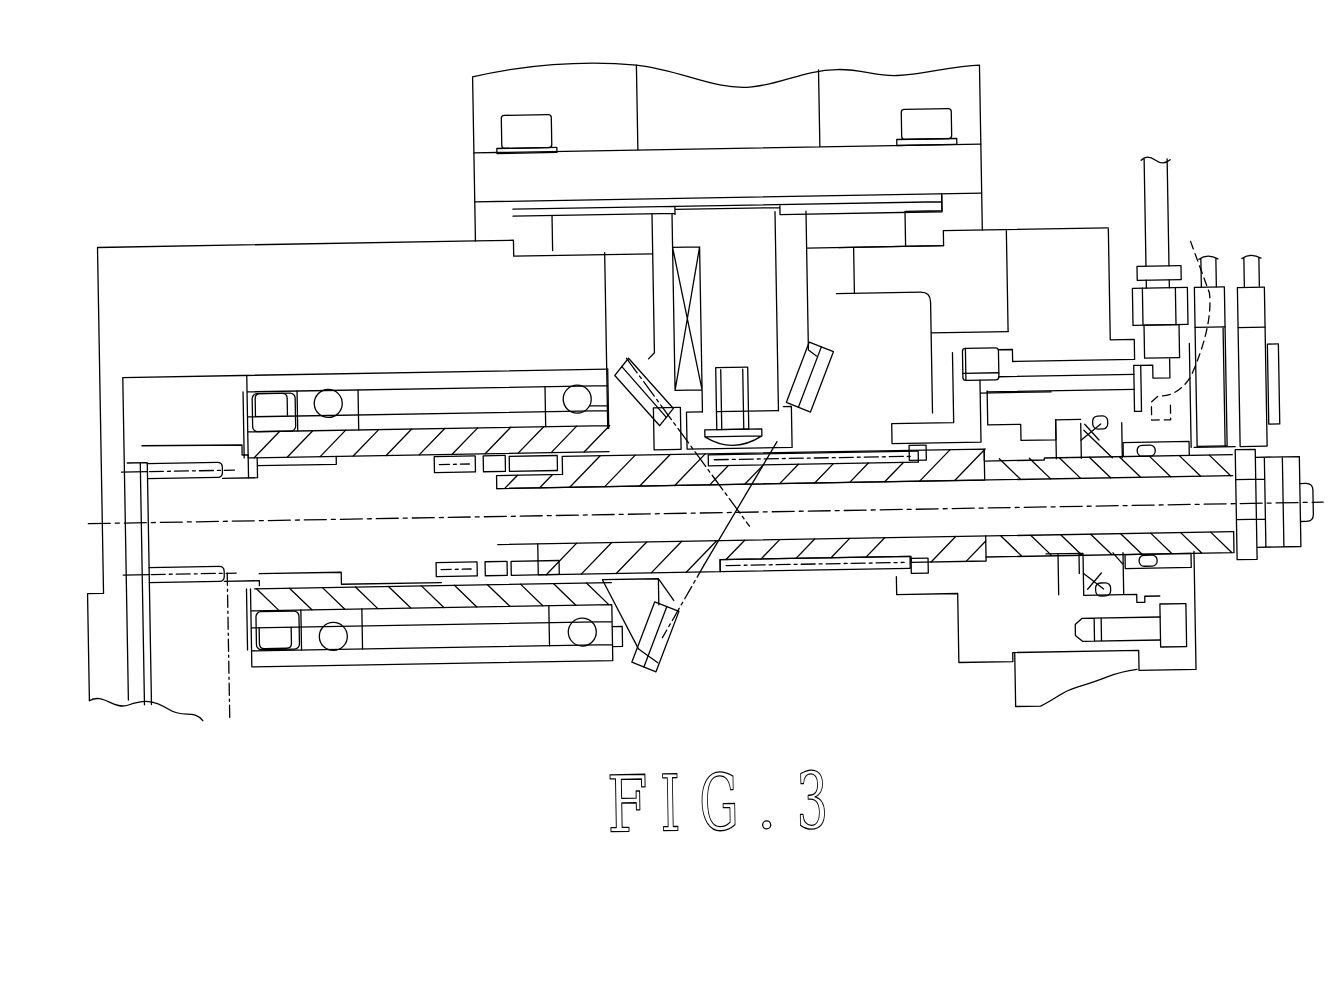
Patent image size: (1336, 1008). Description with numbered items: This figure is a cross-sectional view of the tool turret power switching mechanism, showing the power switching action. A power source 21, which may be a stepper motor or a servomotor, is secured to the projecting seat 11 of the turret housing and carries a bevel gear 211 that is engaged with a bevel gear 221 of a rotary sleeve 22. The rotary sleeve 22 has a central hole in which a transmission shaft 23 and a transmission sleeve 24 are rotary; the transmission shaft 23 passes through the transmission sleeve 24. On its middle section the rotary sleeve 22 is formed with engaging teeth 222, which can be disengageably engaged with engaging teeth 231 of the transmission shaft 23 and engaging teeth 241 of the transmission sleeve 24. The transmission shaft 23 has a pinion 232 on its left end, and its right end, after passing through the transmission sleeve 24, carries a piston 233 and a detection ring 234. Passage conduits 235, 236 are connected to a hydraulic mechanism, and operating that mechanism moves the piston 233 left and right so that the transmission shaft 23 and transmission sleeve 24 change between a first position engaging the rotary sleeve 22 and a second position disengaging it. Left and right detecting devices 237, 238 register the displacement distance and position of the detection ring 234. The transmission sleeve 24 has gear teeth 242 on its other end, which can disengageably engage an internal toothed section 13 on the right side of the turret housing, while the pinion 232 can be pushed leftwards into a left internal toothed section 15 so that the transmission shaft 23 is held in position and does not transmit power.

The projecting seat 11 is at (416, 248).
The internal toothed section 13 is at (888, 574).
The left internal toothed section 15 is at (141, 463).
The power source 21 is at (973, 101).
The bevel gear 211 is at (838, 352).
The rotary sleeve 22 is at (449, 596).
The bevel gear 221 is at (660, 643).
The engaging teeth 222 is at (493, 572).
The transmission shaft 23 is at (810, 530).
The engaging teeth 231 is at (445, 566).
The pinion 232 is at (200, 454).
The piston 233 is at (1102, 575).
The detection ring 234 is at (1247, 569).
The passage conduit 235 is at (1027, 429).
The passage conduit 236 is at (1190, 276).
The left detecting device 237 is at (1223, 309).
The right detecting device 238 is at (1258, 316).
The transmission sleeve 24 is at (872, 550).
The engaging teeth 241 is at (544, 572).
The gear teeth 242 is at (788, 572).